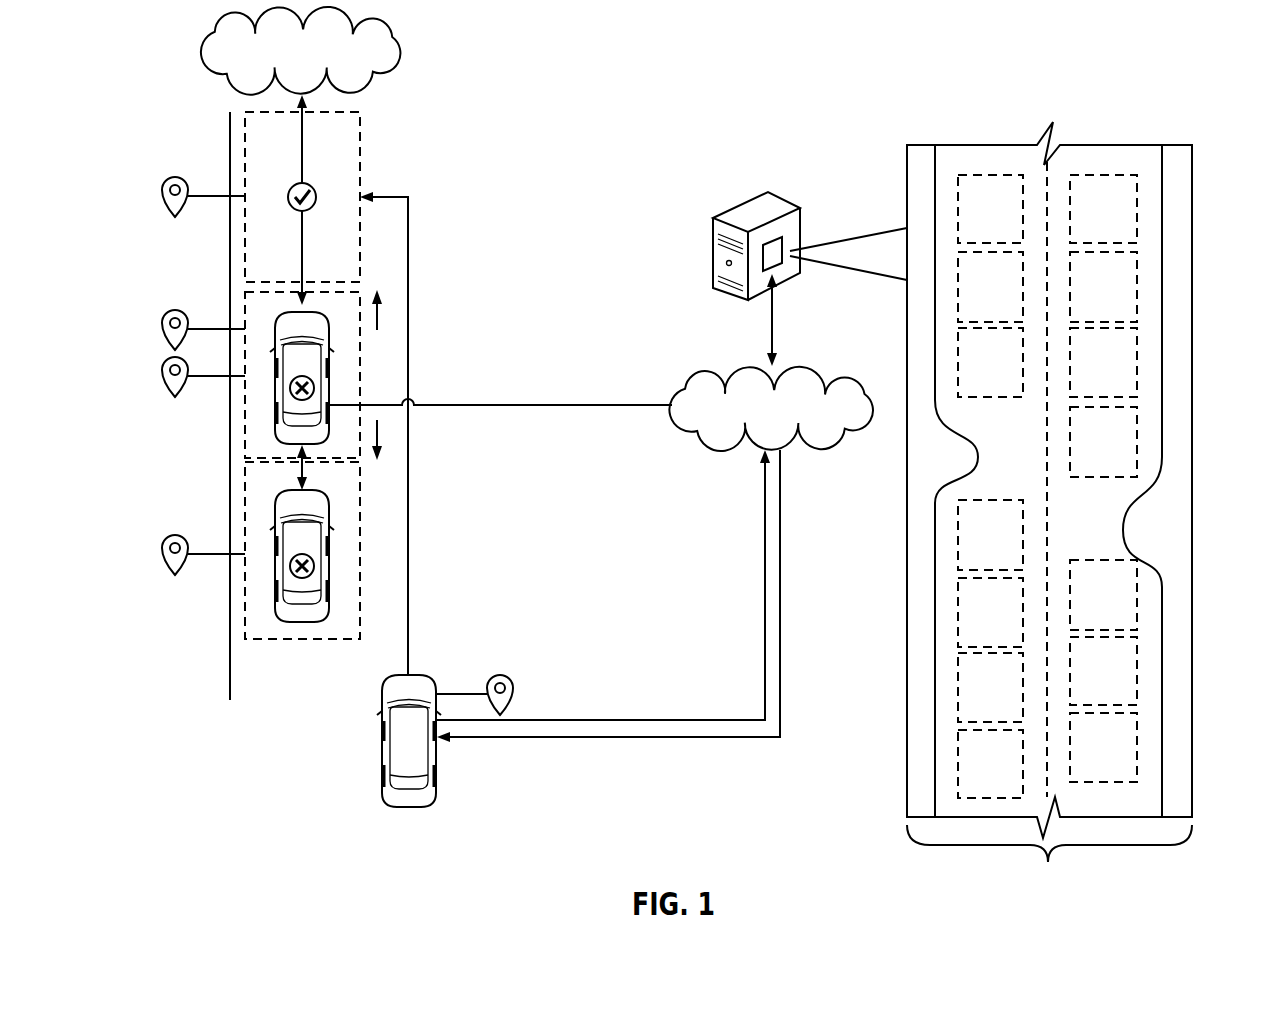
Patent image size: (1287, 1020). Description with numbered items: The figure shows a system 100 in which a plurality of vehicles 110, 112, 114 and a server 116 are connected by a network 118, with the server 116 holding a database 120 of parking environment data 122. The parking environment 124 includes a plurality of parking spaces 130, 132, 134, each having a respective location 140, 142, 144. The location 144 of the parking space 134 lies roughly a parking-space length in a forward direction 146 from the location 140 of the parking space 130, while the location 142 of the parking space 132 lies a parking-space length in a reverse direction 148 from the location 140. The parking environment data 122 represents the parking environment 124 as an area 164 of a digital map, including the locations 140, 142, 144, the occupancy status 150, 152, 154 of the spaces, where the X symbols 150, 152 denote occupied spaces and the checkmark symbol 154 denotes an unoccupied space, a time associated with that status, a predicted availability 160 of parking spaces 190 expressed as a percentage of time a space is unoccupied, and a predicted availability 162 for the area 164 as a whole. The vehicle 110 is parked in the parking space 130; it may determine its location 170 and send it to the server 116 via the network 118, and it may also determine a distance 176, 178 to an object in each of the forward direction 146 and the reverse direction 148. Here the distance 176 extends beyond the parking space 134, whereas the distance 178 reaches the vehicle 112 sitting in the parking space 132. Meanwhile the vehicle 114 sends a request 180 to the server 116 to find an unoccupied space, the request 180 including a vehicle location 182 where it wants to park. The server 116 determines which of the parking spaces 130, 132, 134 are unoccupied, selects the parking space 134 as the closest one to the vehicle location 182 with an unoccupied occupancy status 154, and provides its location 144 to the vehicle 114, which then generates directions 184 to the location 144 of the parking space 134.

The system 100 is at (1114, 60).
The vehicle 110 is at (282, 425).
The vehicle 112 is at (245, 627).
The vehicle 114 is at (437, 778).
The server 116 is at (742, 207).
The network 118 is at (795, 421).
The database 120 is at (776, 240).
The parking environment data 122 is at (545, 405).
The parking environment 124 is at (422, 80).
The parking space 130 is at (245, 305).
The parking space 132 is at (245, 535).
The parking space 134 is at (245, 140).
The location 140 is at (163, 369).
The location 142 is at (163, 547).
The location 144 is at (163, 190).
The forward direction 146 is at (377, 318).
The reverse direction 148 is at (377, 432).
The occupancy status 150 is at (288, 392).
The occupancy status 152 is at (286, 576).
The occupancy status 154 is at (290, 198).
The predicted availability 160 is at (983, 182).
The predicted availability 162 is at (1100, 887).
The area 164 is at (1162, 745).
The location 170 is at (163, 322).
The distance 176 is at (302, 175).
The distance 178 is at (312, 466).
The request 180 is at (651, 720).
The vehicle location 182 is at (514, 684).
The directions 184 is at (408, 620).
The parking spaces 190 is at (995, 178).